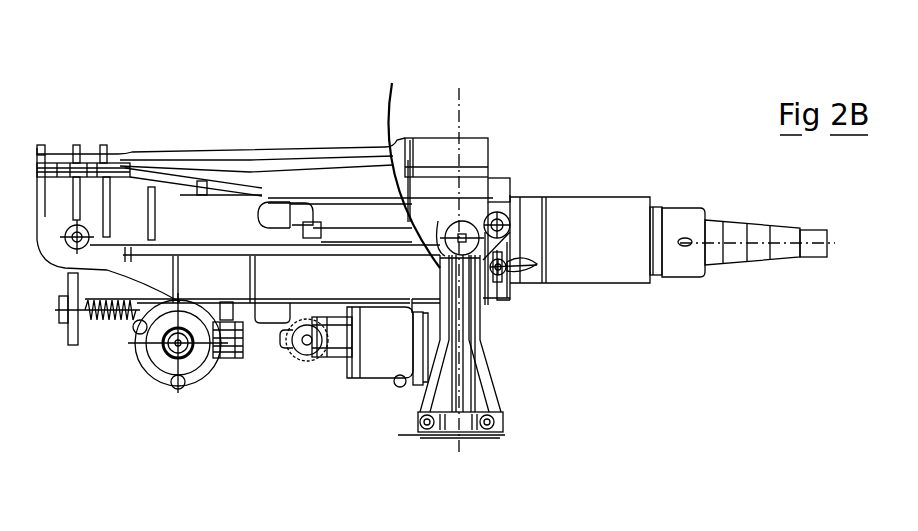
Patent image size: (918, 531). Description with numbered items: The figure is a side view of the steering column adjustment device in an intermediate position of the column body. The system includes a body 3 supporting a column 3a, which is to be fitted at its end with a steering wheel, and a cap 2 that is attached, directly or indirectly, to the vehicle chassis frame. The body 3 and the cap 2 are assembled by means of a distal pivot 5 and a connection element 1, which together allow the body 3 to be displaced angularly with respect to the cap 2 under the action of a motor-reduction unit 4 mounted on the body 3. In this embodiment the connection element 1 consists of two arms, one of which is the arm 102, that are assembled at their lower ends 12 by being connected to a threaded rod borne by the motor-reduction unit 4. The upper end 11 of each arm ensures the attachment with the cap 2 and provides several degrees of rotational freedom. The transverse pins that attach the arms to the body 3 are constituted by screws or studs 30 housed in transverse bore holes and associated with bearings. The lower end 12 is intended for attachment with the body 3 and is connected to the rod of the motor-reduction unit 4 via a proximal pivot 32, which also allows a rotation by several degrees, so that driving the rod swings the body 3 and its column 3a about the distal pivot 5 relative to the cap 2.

The connection element 1 is at (482, 332).
The cap 2 is at (490, 141).
The body 3 is at (497, 323).
The column 3a is at (607, 220).
The motor-reduction unit 4 is at (387, 352).
The distal pivot 5 is at (80, 232).
The upper end 11 is at (405, 158).
The lower end 12 is at (478, 440).
The screws or studs 30 is at (473, 228).
The proximal pivot 32 is at (503, 435).
The arm 102 is at (413, 425).